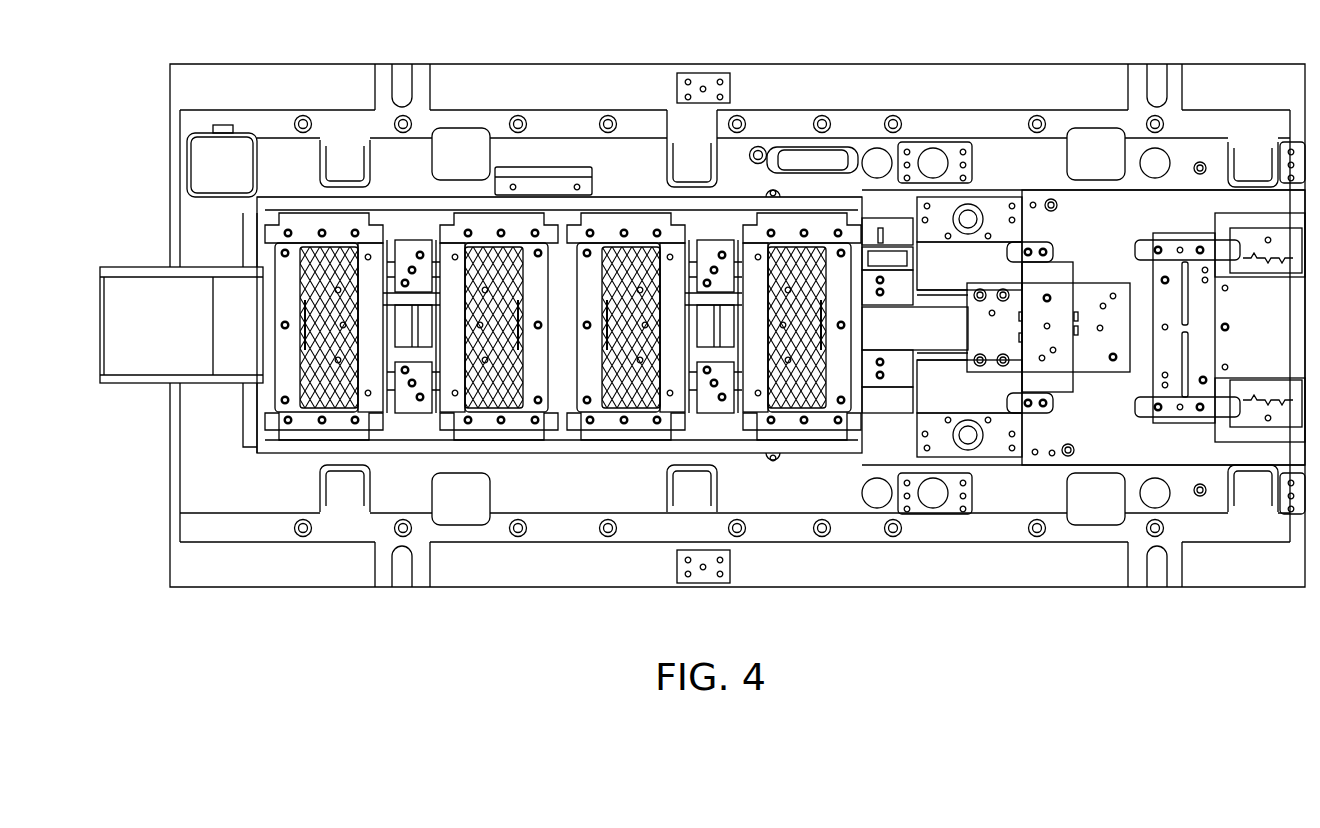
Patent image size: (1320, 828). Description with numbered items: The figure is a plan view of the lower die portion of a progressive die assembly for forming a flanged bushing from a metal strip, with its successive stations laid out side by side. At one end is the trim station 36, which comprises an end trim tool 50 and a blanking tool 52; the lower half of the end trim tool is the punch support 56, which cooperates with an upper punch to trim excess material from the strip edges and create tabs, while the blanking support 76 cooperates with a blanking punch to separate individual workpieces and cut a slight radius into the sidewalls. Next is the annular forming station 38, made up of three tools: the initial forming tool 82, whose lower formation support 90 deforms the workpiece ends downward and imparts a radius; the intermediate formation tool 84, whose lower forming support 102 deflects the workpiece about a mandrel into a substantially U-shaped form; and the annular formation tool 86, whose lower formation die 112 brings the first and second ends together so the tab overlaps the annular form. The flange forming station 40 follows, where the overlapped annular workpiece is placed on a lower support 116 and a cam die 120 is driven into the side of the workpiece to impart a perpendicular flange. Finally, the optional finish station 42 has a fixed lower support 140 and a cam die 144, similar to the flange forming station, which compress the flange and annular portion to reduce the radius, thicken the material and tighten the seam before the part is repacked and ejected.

The trim station 36 is at (1252, 168).
The annular forming station 38 is at (992, 164).
The flange forming station 40 is at (700, 192).
The finish station 42 is at (398, 183).
The end trim tool 50 is at (1285, 245).
The blanking tool 52 is at (1195, 240).
The punch support 56 is at (1285, 400).
The blanking support 76 is at (1180, 418).
The initial forming tool 82 is at (1036, 236).
The intermediate formation tool 84 is at (942, 283).
The annular formation tool 86 is at (895, 300).
The lower formation support 90 is at (1040, 412).
The lower forming support 102 is at (943, 335).
The lower formation die 112 is at (893, 333).
The lower support 116 is at (708, 395).
The cam die 120 is at (660, 340).
The fixed lower support 140 is at (405, 335).
The cam die 144 is at (383, 330).